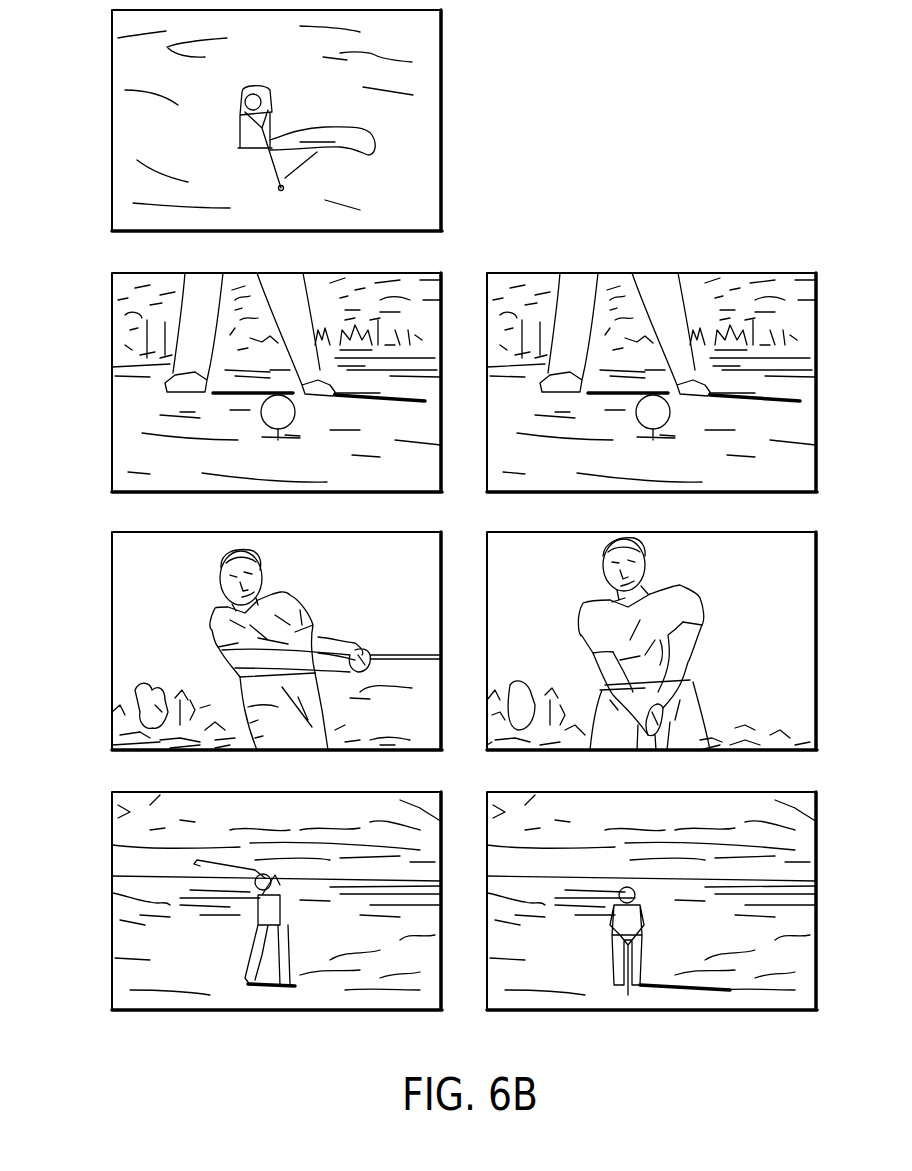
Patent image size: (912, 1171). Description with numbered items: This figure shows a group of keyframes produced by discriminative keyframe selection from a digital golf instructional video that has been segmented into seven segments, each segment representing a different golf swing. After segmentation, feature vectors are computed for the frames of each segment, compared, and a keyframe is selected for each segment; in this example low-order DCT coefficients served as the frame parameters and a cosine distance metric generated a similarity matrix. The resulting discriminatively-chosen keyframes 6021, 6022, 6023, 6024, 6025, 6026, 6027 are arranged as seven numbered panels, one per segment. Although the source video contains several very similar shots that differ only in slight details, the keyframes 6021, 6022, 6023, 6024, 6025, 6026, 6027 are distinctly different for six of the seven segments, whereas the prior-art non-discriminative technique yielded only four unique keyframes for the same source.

The discriminatively-chosen keyframe 6021 is at (112, 97).
The discriminatively-chosen keyframe 6022 is at (112, 360).
The discriminatively-chosen keyframe 6023 is at (817, 348).
The discriminatively-chosen keyframe 6024 is at (112, 620).
The discriminatively-chosen keyframe 6025 is at (817, 610).
The discriminatively-chosen keyframe 6026 is at (112, 870).
The discriminatively-chosen keyframe 6027 is at (817, 870).